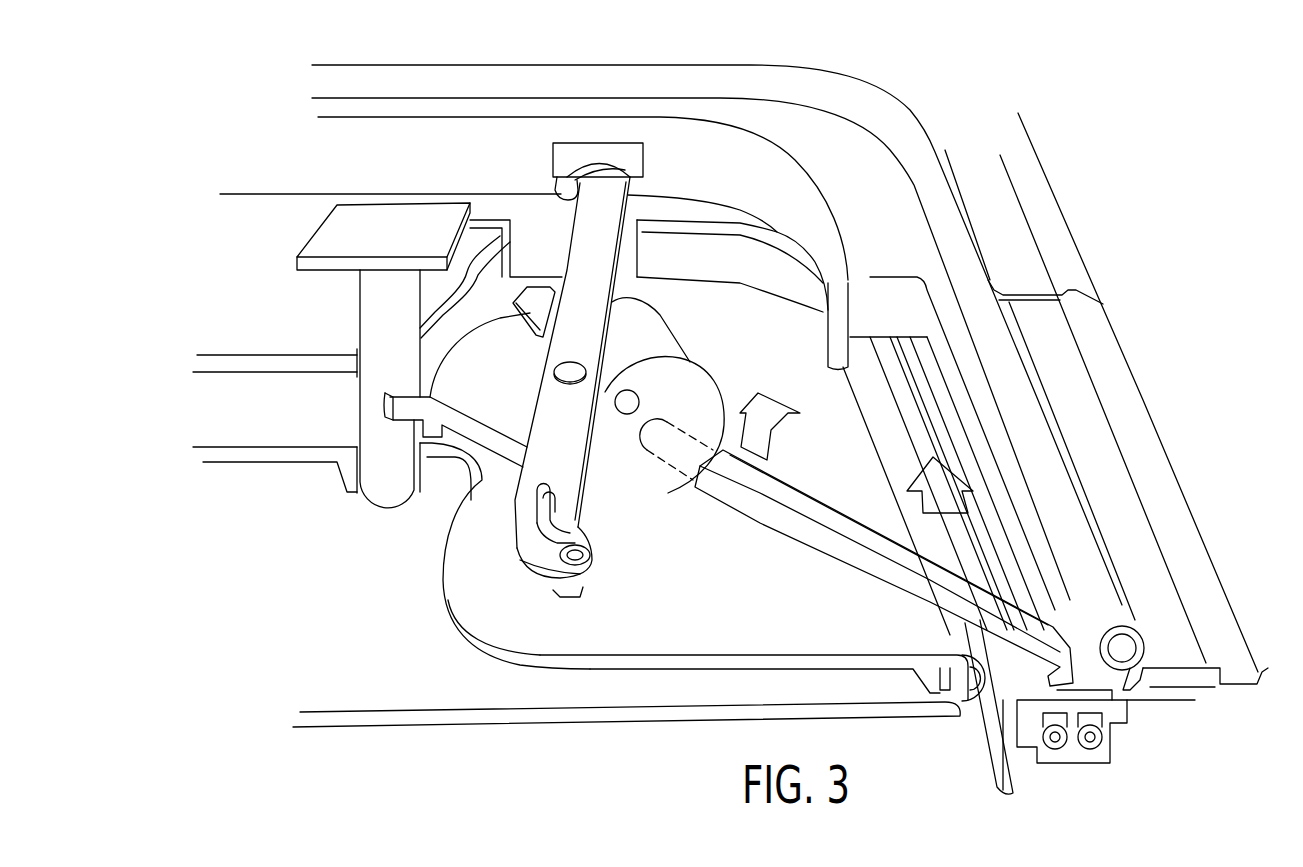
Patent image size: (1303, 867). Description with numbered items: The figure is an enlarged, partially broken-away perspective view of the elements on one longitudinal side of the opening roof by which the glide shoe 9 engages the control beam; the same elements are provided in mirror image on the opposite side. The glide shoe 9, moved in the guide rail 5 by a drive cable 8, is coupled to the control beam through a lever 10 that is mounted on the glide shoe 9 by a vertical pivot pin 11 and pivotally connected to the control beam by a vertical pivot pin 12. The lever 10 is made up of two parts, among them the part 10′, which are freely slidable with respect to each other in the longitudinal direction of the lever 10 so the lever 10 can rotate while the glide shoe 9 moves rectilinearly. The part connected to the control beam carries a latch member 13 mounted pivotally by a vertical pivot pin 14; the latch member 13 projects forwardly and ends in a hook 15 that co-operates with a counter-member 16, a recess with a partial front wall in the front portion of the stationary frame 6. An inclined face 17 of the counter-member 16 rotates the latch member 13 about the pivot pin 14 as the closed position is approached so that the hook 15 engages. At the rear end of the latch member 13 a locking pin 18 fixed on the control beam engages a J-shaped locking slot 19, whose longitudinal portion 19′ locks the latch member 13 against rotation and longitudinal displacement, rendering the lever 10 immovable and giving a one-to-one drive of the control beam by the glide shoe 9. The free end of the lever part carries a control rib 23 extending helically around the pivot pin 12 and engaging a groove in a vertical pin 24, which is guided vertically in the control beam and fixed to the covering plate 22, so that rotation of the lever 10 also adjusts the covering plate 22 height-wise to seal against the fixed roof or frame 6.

The guide rail 5 is at (1097, 753).
The stationary frame 6 is at (1217, 672).
The drive cable 8 is at (1093, 745).
The glide shoe 9 is at (1060, 708).
The lever 10 is at (702, 497).
The lever part 10′ is at (773, 497).
The vertical pivot pin 11 is at (1073, 667).
The vertical pivot pin 12 is at (622, 394).
The latch member 13 is at (570, 241).
The vertical pivot pin 14 is at (553, 367).
The hook 15 is at (577, 160).
The counter-member 16 is at (573, 181).
The inclined face 17 is at (634, 150).
The locking pin 18 is at (567, 581).
The locking slot 19 is at (543, 510).
The slot portion 19′ is at (540, 505).
The covering plate 22 is at (322, 237).
The control rib 23 is at (437, 353).
The vertical pin 24 is at (365, 308).